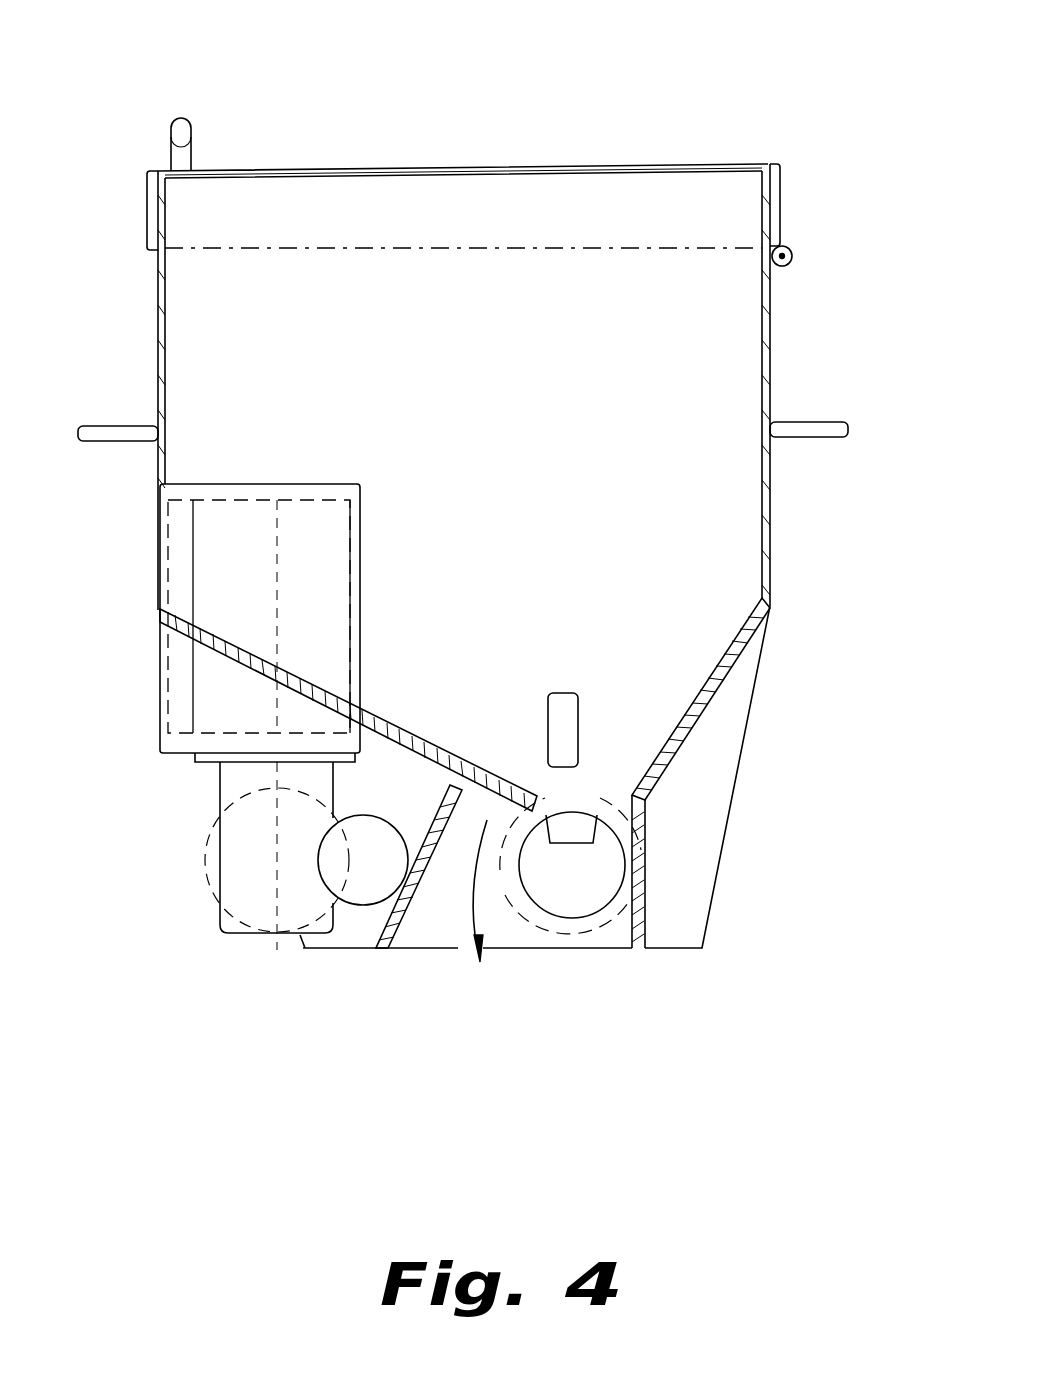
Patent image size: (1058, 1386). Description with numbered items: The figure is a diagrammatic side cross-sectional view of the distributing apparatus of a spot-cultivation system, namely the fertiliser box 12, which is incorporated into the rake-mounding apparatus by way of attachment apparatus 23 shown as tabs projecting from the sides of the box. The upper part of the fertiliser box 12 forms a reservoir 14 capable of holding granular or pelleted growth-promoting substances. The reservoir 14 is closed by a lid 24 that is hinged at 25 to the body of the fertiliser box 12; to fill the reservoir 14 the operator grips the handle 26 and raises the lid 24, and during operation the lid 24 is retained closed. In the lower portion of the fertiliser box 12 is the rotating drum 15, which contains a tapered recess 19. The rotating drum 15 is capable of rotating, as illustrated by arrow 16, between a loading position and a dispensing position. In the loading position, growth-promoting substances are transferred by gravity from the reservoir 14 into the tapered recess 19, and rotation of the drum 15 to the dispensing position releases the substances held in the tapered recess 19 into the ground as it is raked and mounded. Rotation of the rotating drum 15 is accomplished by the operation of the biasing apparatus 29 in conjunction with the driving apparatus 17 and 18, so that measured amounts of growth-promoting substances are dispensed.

The fertiliser box 12 is at (508, 135).
The reservoir 14 is at (698, 508).
The rotating drum 15 is at (593, 885).
The arrow 16 is at (471, 966).
The driving apparatus 17 is at (352, 866).
The driving apparatus 18 is at (557, 725).
The tapered recess 19 is at (577, 822).
The attachment apparatus 23 is at (798, 422).
The lid 24 is at (605, 186).
The hinge 25 is at (793, 256).
The handle 26 is at (195, 126).
The biasing apparatus 29 is at (357, 935).